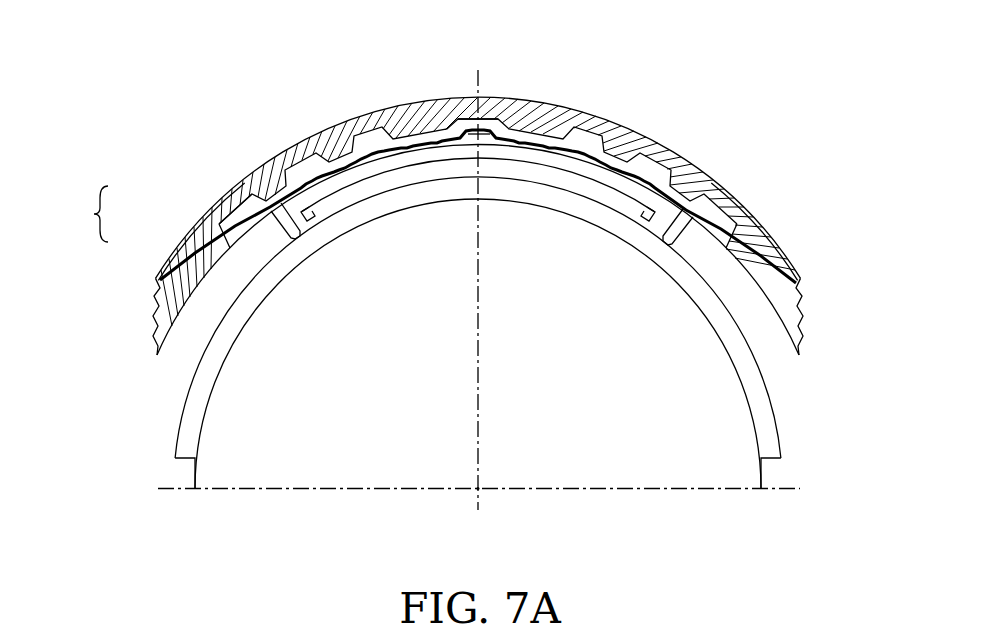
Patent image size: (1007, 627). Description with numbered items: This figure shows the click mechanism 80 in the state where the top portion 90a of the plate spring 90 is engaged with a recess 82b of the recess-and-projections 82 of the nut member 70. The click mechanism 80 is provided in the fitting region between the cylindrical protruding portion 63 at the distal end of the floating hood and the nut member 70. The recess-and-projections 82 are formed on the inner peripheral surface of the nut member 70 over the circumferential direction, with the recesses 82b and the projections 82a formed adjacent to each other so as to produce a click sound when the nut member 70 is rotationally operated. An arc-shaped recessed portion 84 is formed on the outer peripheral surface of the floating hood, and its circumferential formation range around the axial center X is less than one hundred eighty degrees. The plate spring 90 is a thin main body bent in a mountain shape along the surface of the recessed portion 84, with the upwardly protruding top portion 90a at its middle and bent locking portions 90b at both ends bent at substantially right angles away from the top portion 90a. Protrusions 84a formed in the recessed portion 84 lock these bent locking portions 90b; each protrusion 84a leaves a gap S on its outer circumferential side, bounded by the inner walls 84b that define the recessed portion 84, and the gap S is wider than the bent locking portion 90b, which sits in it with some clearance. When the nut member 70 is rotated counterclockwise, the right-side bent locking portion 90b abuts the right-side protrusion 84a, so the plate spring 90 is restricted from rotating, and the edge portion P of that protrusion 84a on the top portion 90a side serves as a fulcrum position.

The click mechanism 80 is at (722, 70).
The recess-and-projections 82 is at (88, 214).
The projections 82a is at (247, 229).
The recesses 82b is at (252, 191).
The recessed portion 84 is at (406, 163).
The protrusions 84a is at (323, 190).
The inner walls 84b is at (291, 242).
The plate spring 90 is at (533, 146).
The top portion 90a is at (469, 126).
The bent locking portions 90b is at (306, 222).
The nut member 70 is at (283, 207).
The cylindrical protruding portion 63 is at (736, 268).
The gap S is at (262, 190).
The edge portion P is at (600, 140).
The axial center X is at (477, 528).